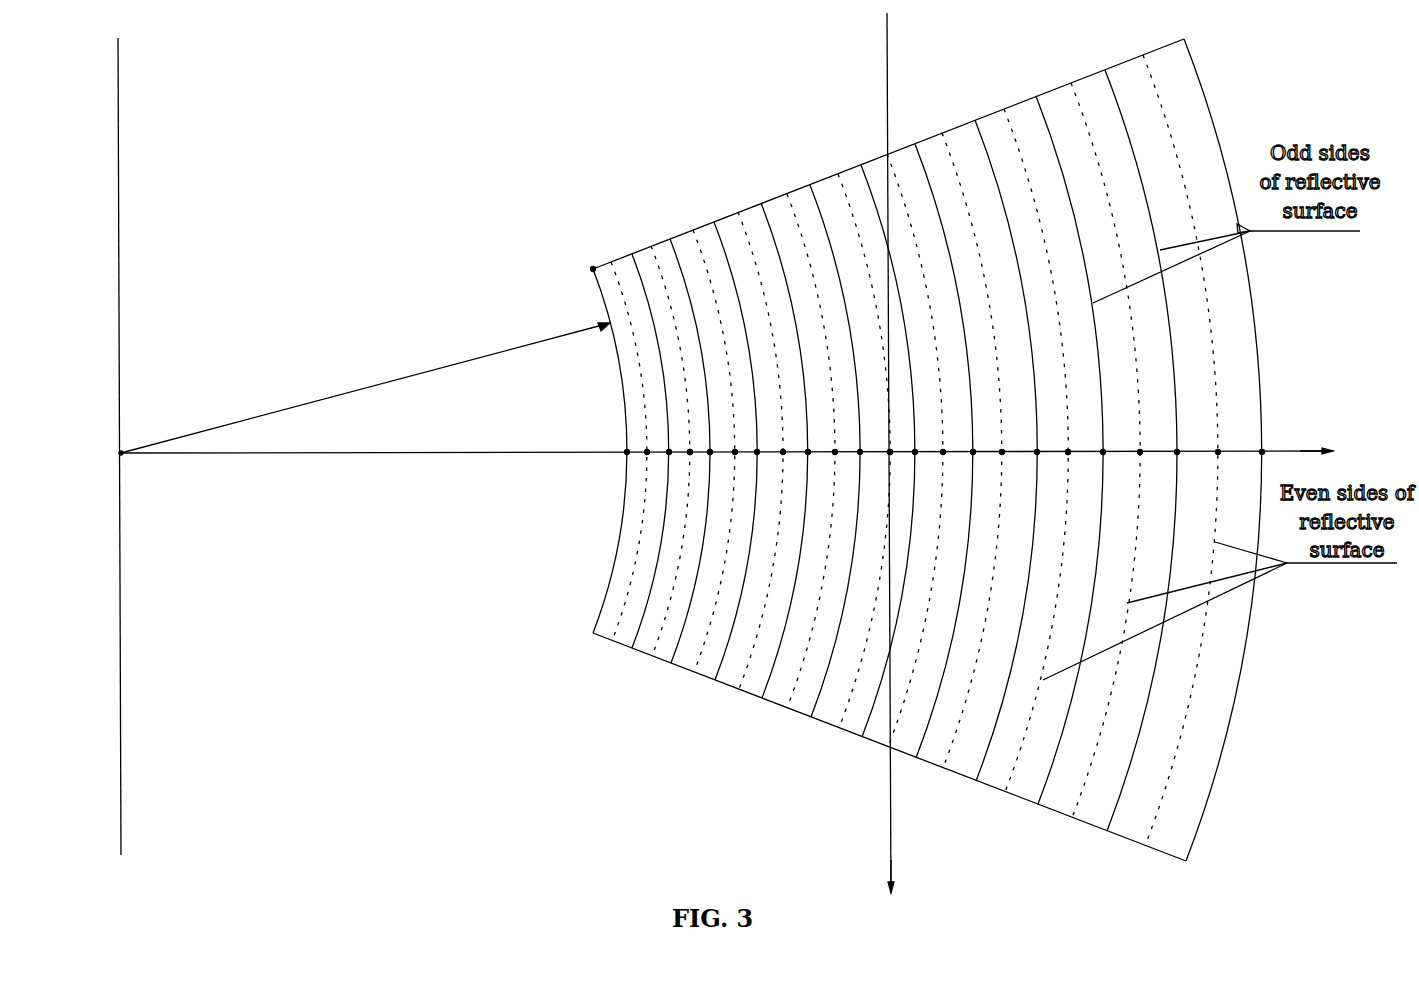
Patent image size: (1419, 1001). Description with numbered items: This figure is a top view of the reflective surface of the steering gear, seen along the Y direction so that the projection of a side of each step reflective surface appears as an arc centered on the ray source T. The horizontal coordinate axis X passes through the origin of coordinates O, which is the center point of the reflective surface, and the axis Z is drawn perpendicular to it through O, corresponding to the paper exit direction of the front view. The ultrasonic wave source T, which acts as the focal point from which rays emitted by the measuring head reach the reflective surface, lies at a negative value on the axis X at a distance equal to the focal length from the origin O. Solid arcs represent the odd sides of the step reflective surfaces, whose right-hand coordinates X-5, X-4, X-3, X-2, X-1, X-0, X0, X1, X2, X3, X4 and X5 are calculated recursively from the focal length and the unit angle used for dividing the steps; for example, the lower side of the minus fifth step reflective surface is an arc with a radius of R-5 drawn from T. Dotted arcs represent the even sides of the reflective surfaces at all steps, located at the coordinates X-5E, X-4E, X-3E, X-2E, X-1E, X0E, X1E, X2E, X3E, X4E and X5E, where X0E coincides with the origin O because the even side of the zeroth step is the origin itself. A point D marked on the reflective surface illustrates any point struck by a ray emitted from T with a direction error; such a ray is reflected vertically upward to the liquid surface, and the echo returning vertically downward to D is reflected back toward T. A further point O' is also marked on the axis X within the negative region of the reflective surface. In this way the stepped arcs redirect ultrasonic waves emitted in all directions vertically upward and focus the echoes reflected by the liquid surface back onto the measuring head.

The odd-side coordinate value of the -5th step reflective surface X-5 is at (611, 451).
The odd-side coordinate value of the -4th step reflective surface X-4 is at (655, 451).
The odd-side coordinate value of the -3rd step reflective surface X-3 is at (697, 451).
The odd-side coordinate value of the -2nd step reflective surface X-2 is at (743, 451).
The odd-side coordinate value of the -1st step reflective surface X-1 is at (791, 450).
The odd-side coordinate value of the 0th step reflective surface on the negative sid X-0 is at (842, 451).
The odd-side coordinate value of the 0th step reflective surface X0 is at (899, 451).
The odd-side coordinate value of the 1st step reflective surface X1 is at (957, 451).
The odd-side coordinate value of the 2nd step reflective surface X2 is at (1018, 450).
The odd-side coordinate value of the 3rd step reflective surface X3 is at (1082, 450).
The odd-side coordinate value of the 4th step reflective surface X4 is at (1154, 450).
The odd-side coordinate value of the 5th step reflective surface X5 is at (1235, 450).
The even-side coordinate value of the -5th step reflective surface X-5E is at (638, 451).
The even-side coordinate value of the -4th step reflective surface X-4E is at (677, 451).
The even-side coordinate value of the -3rd step reflective surface X-3E is at (721, 451).
The even-side coordinate value of the -2nd step reflective surface X-2E is at (769, 450).
The even-side coordinate value of the -1st step reflective surface X-1E is at (820, 451).
The even-side coordinate value of the 0th step reflective surface X0E is at (873, 451).
The even-side coordinate value of the 1st step reflective surface X1E is at (923, 450).
The even-side coordinate value of the 2nd step reflective surface X2E is at (980, 450).
The even-side coordinate value of the 3rd step reflective surface X3E is at (1046, 450).
The even-side coordinate value of the 4th step reflective surface X4E is at (1115, 450).
The even-side coordinate value of the 5th step reflective surface X5E is at (1187, 450).
The radius of the lower side of the -5th step reflective surface R-5 is at (365, 378).
The point O' is at (686, 434).
The origin of coordinates O is at (895, 434).
The point on the reflective surface D is at (1077, 434).
The ultrasonic wave source T is at (113, 447).
The coordinate axis OX X is at (1316, 439).
The coordinate axis OZ Z is at (900, 876).